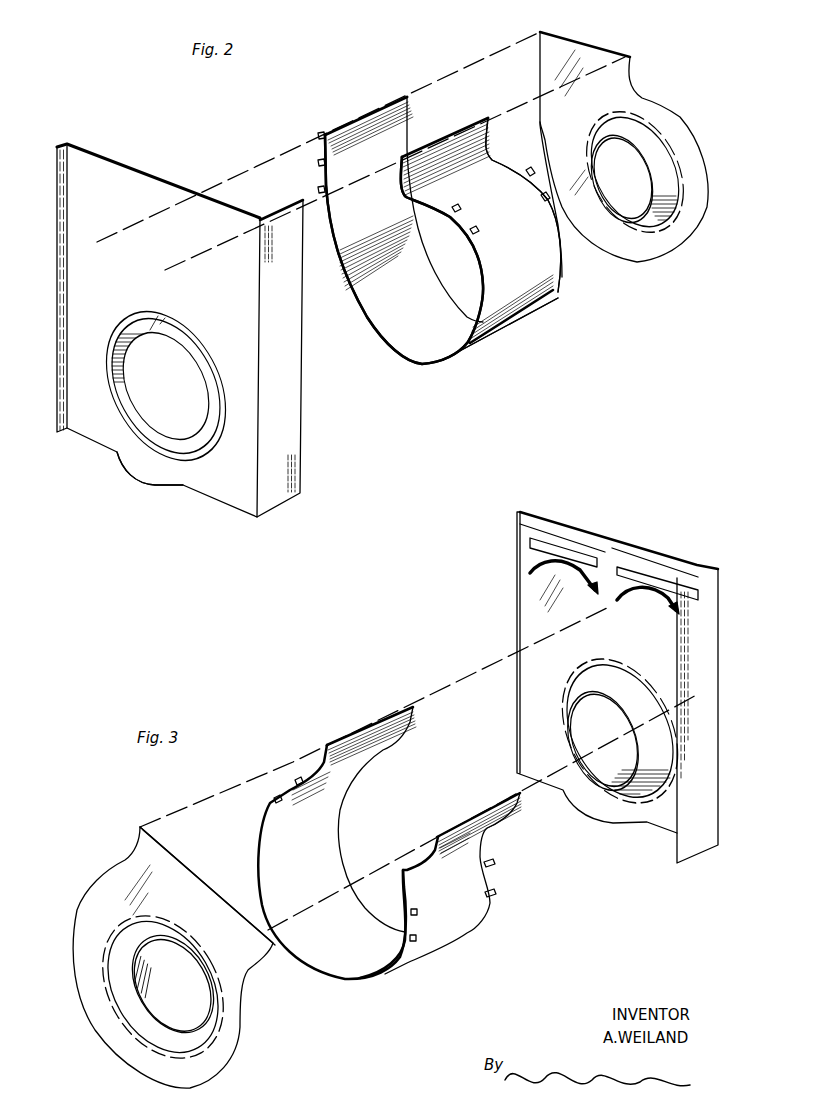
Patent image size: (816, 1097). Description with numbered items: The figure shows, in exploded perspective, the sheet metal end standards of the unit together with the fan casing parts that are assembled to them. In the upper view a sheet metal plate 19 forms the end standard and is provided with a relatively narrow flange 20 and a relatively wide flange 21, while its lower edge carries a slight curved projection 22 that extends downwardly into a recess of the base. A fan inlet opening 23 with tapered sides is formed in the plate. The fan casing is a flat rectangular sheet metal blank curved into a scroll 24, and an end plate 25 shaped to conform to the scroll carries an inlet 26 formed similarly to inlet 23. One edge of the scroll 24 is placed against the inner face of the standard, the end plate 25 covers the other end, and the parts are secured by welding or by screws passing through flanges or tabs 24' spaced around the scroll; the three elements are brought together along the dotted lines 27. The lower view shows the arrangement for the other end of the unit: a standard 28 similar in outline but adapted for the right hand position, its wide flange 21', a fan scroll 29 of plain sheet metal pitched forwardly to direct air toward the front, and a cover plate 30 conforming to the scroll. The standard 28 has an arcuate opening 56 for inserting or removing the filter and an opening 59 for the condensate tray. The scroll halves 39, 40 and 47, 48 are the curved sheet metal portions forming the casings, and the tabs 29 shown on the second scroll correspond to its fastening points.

In FIG. 2, the sheet metal plate 19 is at (205, 157).
In FIG. 2, the relatively narrow flange 20 is at (60, 165).
In FIG. 2, the relatively wide flange 21 is at (280, 351).
In FIG. 3, the side flange of panel 28 21' is at (706, 720).
In FIG. 2, the curved projection 22 is at (150, 484).
In FIG. 2, the fan inlet opening 23 is at (164, 336).
In FIG. 2, the scroll 24 is at (461, 241).
In FIG. 2, the flanges or tabs 24' is at (419, 183).
In FIG. 2, the end plate 25 is at (688, 234).
In FIG. 2, the inlet 26 is at (650, 180).
In FIG. 2, the dotted lines 27 is at (480, 59).
In FIG. 3, the standard 28 is at (646, 522).
In FIG. 3, the fan scroll 29 is at (493, 870).
In FIG. 3, the cover plate 30 is at (107, 880).
In FIG. 2, the upper half-shell of duct 39 is at (488, 117).
In FIG. 2, the lower half-shell of duct 40 is at (405, 96).
In FIG. 3, the left half-shell 47 is at (413, 707).
In FIG. 3, the right half-shell 48 is at (519, 795).
In FIG. 3, the arcuate opening 56 is at (647, 593).
In FIG. 3, the opening 59 is at (665, 578).